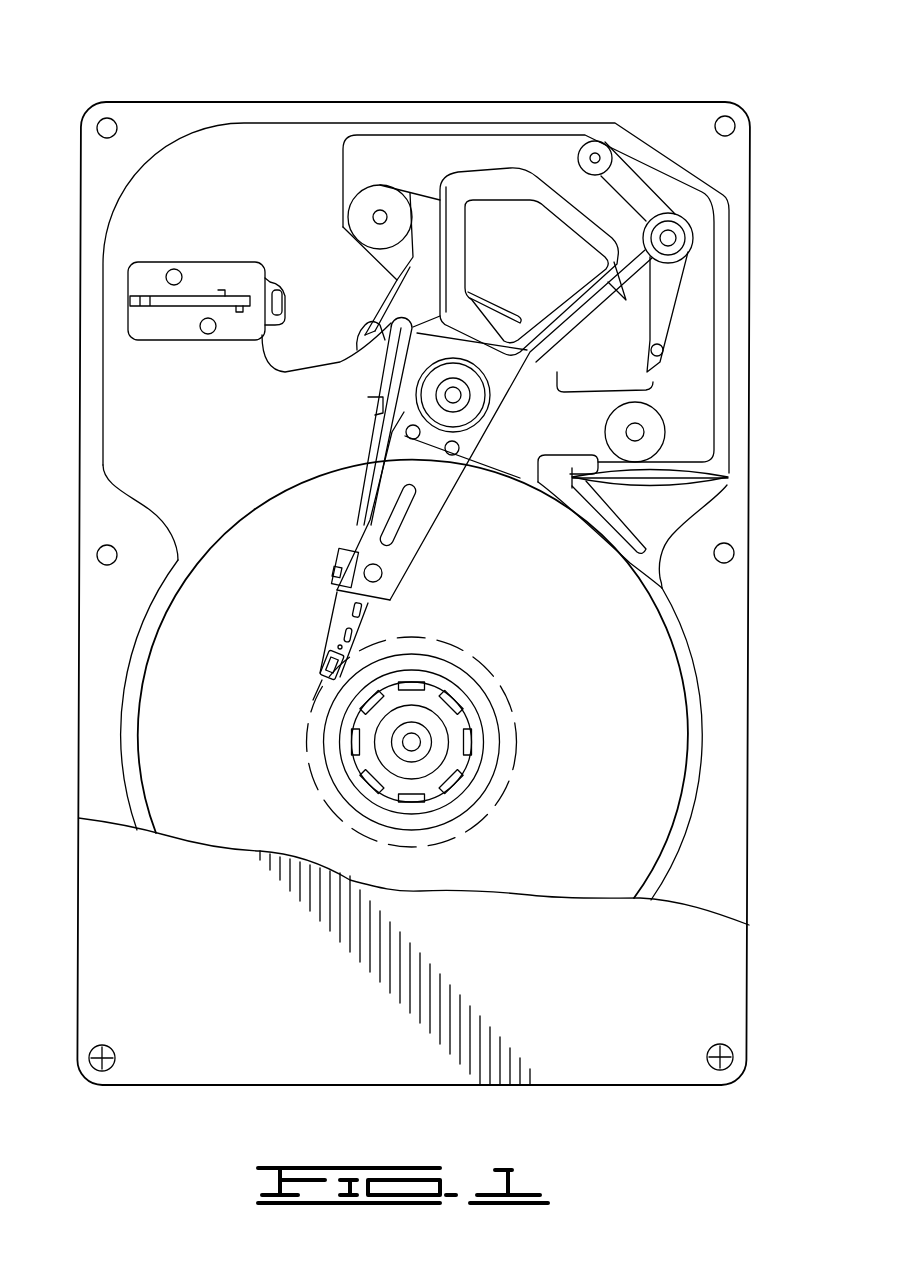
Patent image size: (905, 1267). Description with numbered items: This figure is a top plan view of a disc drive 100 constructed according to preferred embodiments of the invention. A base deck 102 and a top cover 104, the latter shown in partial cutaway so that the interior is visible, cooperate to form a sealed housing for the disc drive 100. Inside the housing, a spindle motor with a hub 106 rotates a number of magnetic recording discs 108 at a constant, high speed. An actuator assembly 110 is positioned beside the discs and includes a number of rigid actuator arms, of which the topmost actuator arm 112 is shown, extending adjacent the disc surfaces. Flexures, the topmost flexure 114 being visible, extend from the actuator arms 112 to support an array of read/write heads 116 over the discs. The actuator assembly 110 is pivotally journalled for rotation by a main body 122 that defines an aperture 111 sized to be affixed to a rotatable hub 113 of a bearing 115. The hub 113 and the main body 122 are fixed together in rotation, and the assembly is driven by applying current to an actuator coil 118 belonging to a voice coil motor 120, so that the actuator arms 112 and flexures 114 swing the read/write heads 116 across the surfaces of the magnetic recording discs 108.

The disc drive 100 is at (178, 62).
The base deck 102 is at (135, 418).
The top cover 104 is at (125, 893).
The hub 106 is at (441, 735).
The magnetic recording discs 108 is at (663, 748).
The actuator assembly 110 is at (443, 473).
The aperture 111 is at (437, 360).
The actuator arms 112 is at (393, 562).
The rotatable hub 113 is at (427, 413).
The flexures 114 is at (342, 622).
The bearing 115 is at (492, 440).
The read/write heads 116 is at (324, 659).
The actuator coil 118 is at (482, 178).
The voice coil motor 120 is at (536, 155).
The main body 122 is at (500, 388).